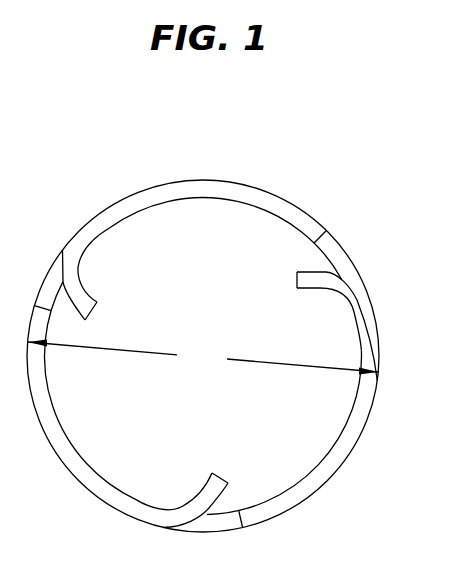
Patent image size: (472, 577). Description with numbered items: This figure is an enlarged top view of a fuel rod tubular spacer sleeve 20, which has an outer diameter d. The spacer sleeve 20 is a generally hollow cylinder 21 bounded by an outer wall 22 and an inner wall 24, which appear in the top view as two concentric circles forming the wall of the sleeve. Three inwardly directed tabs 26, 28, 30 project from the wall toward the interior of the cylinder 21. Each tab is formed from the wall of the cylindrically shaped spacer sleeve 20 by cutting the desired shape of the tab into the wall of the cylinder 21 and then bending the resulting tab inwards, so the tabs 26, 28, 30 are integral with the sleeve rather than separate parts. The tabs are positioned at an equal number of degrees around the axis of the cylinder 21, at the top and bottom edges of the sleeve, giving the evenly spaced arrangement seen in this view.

The spacer sleeve 20 is at (302, 118).
The hollow cylinder 21 is at (175, 180).
The outer wall 22 is at (98, 497).
The inner wall 24 is at (330, 464).
The inwardly directed tab 26 is at (318, 271).
The inwardly directed tab 28 is at (92, 298).
The inwardly directed tab 30 is at (210, 480).